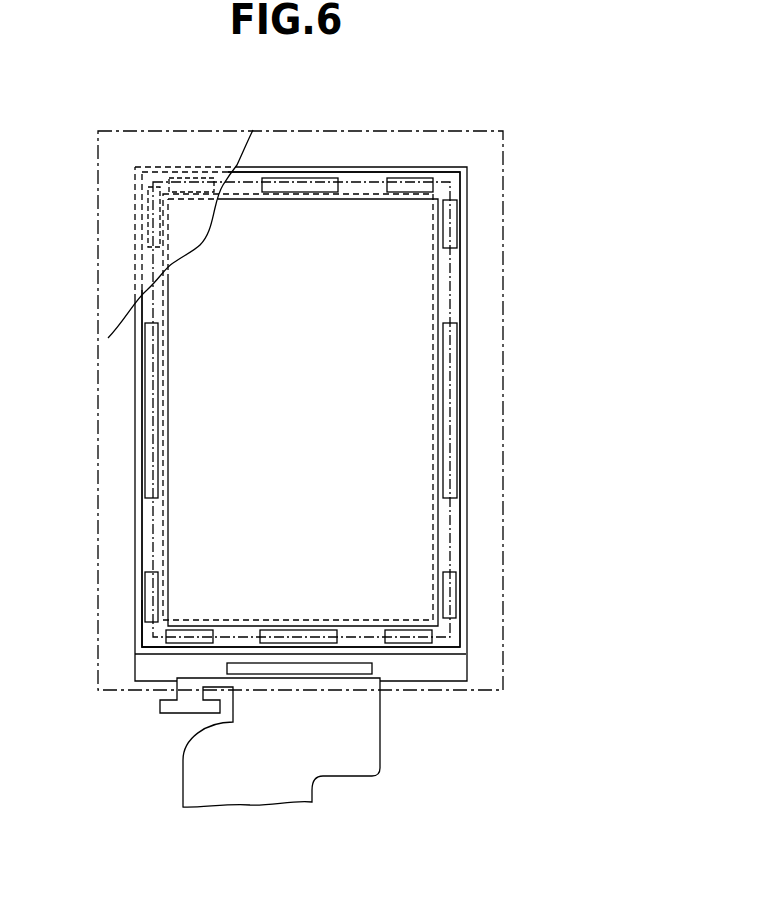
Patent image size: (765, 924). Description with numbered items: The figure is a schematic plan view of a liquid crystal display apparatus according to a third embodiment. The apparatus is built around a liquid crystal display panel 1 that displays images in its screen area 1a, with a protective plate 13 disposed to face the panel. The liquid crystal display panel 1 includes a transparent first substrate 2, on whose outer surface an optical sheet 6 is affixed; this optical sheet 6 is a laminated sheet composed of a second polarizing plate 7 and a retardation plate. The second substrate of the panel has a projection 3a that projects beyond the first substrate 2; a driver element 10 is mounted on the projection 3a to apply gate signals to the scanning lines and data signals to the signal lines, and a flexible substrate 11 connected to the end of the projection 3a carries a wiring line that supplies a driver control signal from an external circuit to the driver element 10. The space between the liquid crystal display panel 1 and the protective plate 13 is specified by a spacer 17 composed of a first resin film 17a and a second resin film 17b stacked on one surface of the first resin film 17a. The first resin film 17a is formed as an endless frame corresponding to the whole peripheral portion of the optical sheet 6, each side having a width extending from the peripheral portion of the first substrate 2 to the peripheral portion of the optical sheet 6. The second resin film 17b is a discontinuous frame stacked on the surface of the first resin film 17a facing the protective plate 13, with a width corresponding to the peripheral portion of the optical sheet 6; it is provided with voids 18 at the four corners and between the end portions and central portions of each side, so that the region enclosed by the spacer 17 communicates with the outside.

The liquid crystal display panel 1 is at (470, 192).
The screen area 1a is at (370, 225).
The first substrate 2 is at (436, 166).
The projection 3a is at (452, 667).
The optical sheet 6 is at (160, 641).
The second polarizing plate 7 is at (415, 440).
The driver element 10 is at (300, 674).
The flexible substrate 11 is at (193, 777).
The protective plate 13 is at (107, 162).
The spacer 17 is at (142, 470).
The first resin film 17a is at (440, 300).
The second resin film 17b is at (293, 178).
The voids 18 is at (153, 171).